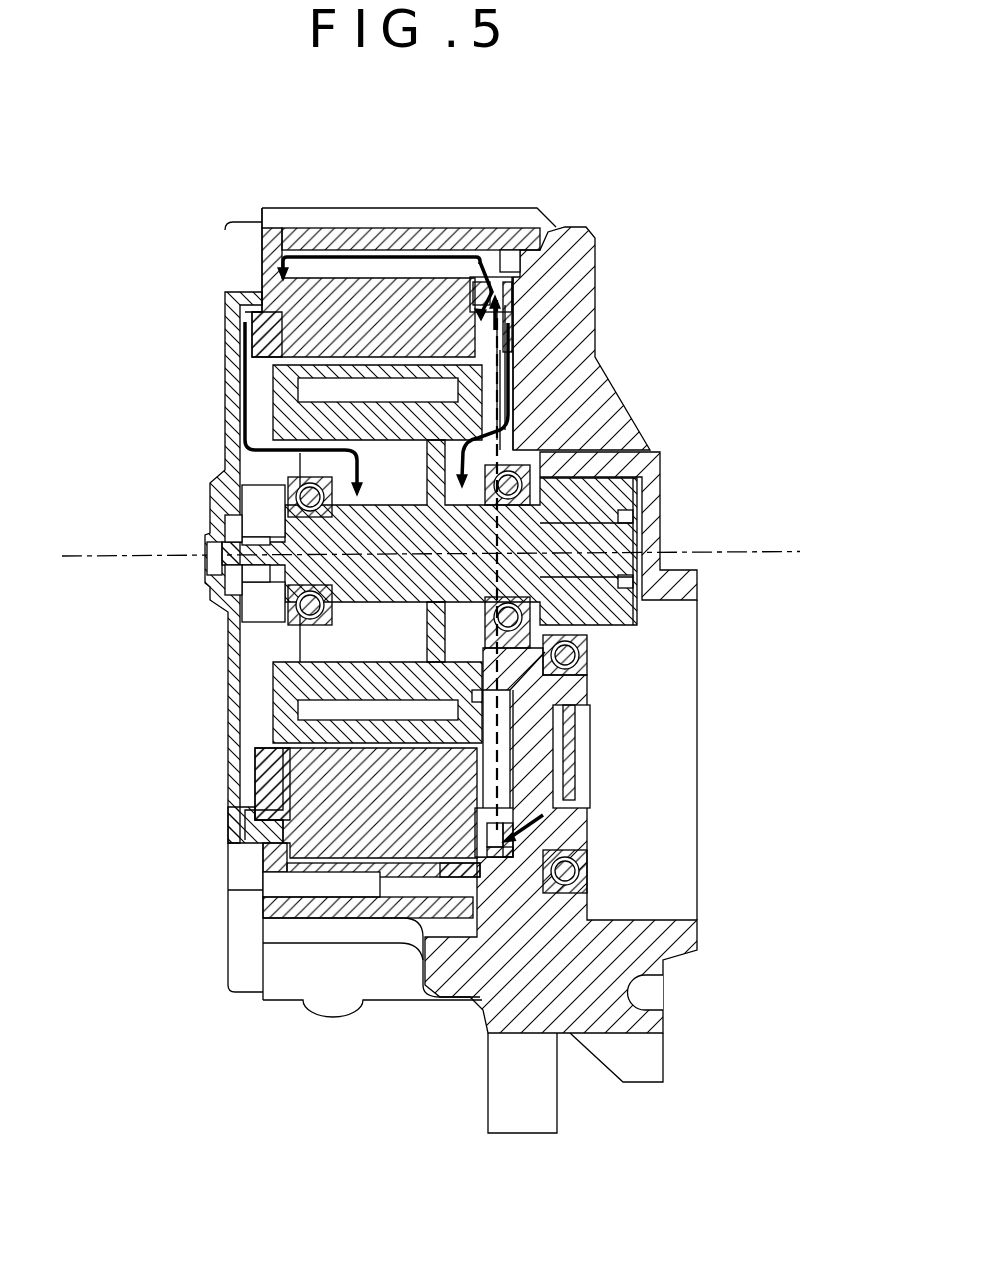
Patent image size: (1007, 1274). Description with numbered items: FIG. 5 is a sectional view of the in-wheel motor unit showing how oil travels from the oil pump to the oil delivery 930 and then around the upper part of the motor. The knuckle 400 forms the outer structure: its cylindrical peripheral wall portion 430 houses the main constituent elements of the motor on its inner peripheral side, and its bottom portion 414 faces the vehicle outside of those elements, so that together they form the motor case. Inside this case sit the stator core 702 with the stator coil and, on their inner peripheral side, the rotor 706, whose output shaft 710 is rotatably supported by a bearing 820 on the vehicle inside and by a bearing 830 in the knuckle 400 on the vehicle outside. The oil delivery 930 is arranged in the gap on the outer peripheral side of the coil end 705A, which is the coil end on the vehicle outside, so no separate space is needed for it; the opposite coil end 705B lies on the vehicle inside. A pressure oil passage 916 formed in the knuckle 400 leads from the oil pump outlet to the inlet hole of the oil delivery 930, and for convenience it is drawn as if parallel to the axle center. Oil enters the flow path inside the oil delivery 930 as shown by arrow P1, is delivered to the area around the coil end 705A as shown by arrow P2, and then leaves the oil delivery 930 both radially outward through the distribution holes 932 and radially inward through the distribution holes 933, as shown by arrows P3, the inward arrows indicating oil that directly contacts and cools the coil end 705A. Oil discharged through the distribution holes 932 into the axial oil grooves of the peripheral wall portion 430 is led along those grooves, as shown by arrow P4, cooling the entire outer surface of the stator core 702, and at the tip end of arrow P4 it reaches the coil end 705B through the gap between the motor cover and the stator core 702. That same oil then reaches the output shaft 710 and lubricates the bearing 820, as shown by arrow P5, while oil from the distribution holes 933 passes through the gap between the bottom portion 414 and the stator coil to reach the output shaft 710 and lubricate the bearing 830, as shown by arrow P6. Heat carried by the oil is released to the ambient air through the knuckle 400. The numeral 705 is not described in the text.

The knuckle 400 is at (562, 430).
The bottom portion 414 is at (508, 298).
The peripheral wall portion 430 is at (452, 238).
The stator core 702 is at (308, 305).
The motor case 705 is at (235, 413).
The coil end 705A is at (513, 306).
The coil end 705B is at (265, 335).
The rotor 706 is at (213, 280).
The output shaft 710 is at (290, 576).
The bearing 820 is at (287, 497).
The bearing 830 is at (545, 464).
The pressure oil passage 916 is at (552, 813).
The oil delivery 930 is at (480, 857).
The distribution holes 932 is at (515, 263).
The distribution holes 933 is at (505, 318).
The arrow P1 is at (545, 832).
The arrow P2 is at (495, 383).
The arrows P3 is at (485, 286).
The arrow P4 is at (400, 243).
The arrow P5 is at (245, 385).
The arrow P6 is at (512, 376).